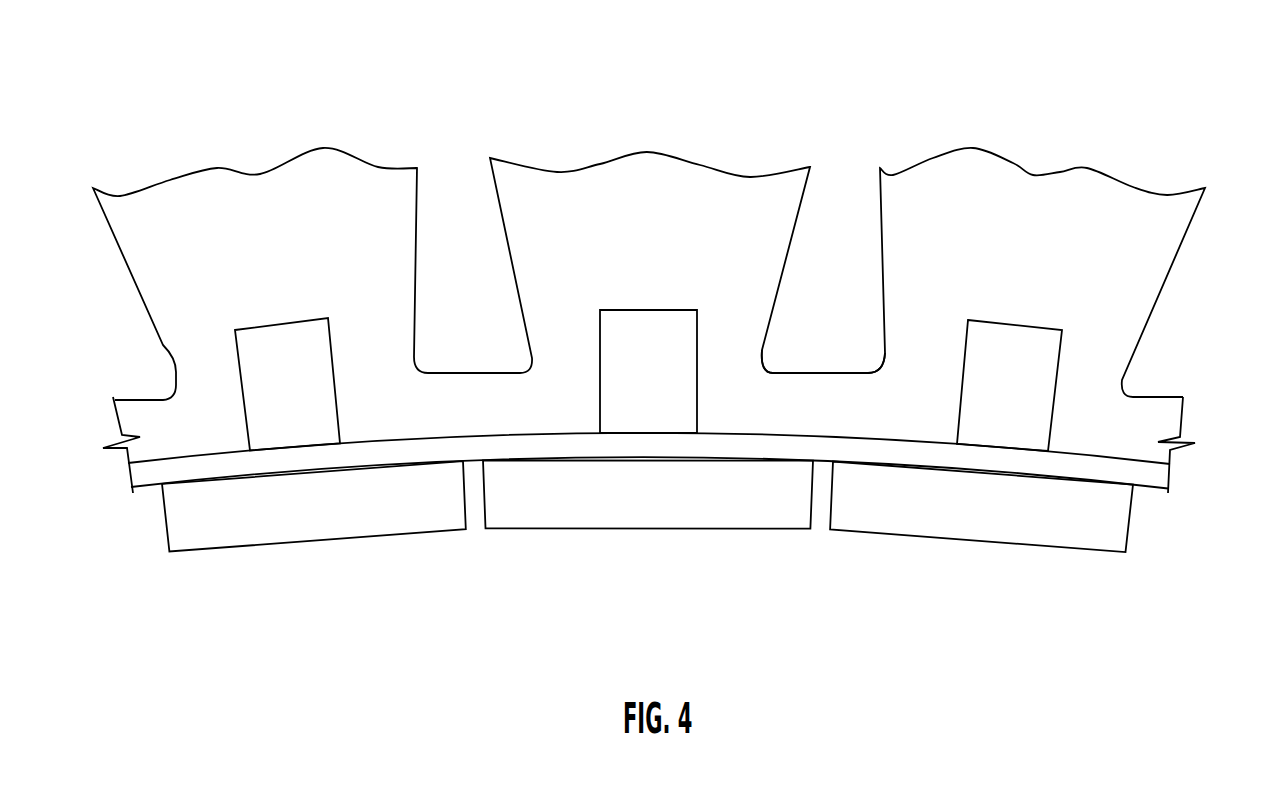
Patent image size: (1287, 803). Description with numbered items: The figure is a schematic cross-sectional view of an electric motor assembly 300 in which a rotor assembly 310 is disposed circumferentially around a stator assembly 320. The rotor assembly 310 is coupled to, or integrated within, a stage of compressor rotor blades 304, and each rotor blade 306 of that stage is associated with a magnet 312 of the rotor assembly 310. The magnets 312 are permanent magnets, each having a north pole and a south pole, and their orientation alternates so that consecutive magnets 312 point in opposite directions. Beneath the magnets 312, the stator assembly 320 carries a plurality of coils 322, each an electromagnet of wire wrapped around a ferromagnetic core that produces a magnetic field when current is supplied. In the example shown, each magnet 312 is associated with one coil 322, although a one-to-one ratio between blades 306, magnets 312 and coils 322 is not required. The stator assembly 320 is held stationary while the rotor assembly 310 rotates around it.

The electric motor assembly 300 is at (687, 314).
The stage of compressor rotor blades 304 is at (358, 117).
The rotor blade 306 is at (232, 168).
The rotor assembly 310 is at (818, 372).
The magnet 312 is at (328, 423).
The stator assembly 320 is at (1147, 475).
The coil 322 is at (322, 537).